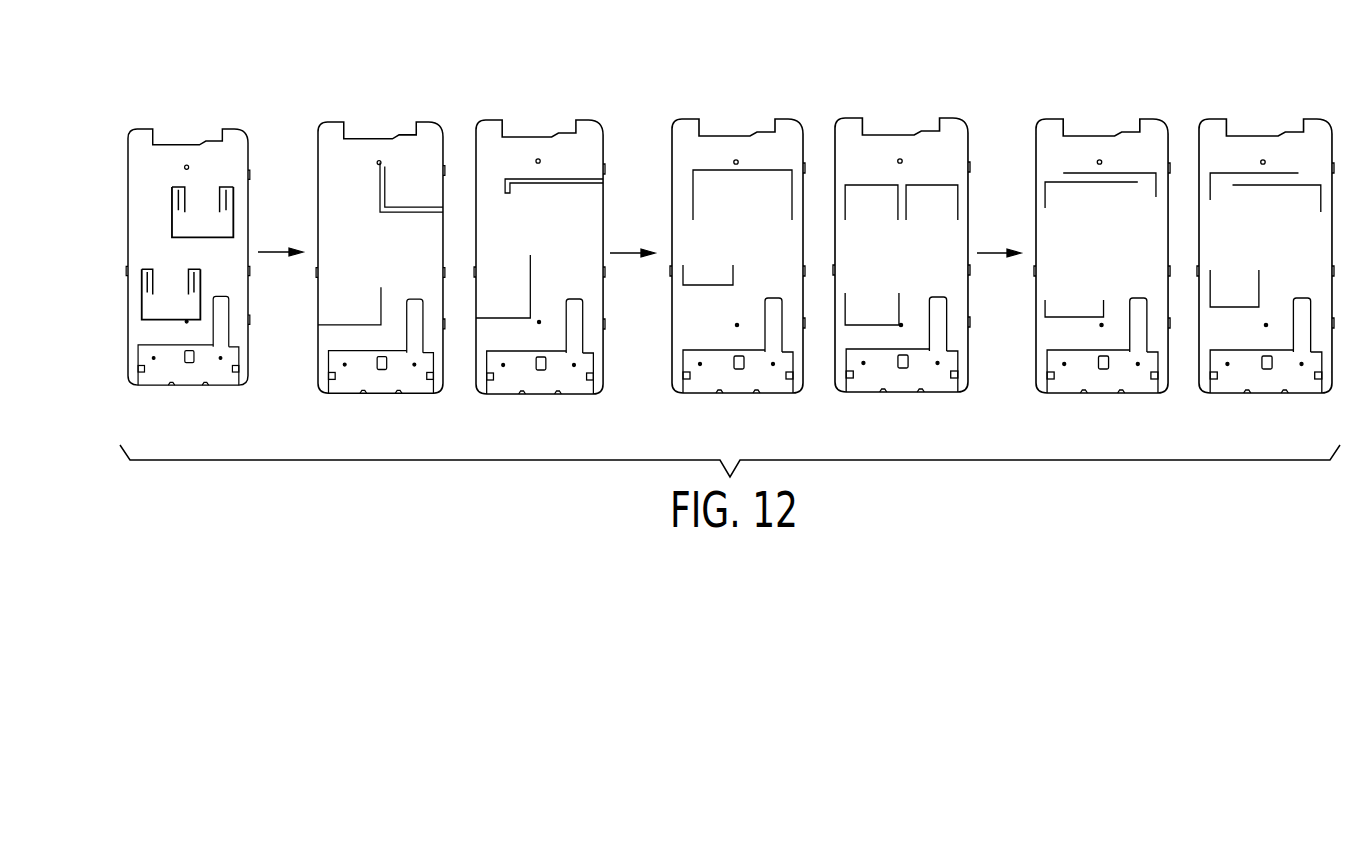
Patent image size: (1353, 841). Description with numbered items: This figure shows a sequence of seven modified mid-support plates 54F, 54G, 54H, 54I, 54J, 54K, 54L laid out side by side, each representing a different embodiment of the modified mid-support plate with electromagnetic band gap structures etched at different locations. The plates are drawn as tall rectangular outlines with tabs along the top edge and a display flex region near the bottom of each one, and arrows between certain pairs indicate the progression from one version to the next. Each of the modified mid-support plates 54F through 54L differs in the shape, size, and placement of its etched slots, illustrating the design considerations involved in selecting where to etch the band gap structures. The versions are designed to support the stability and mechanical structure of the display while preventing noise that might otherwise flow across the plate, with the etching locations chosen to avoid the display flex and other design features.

The modified mid-support plate 54F is at (171, 234).
The modified mid-support plate 54G is at (365, 235).
The modified mid-support plate 54H is at (523, 235).
The modified mid-support plate 54I is at (721, 235).
The modified mid-support plate 54J is at (884, 234).
The modified mid-support plate 54K is at (1085, 235).
The modified mid-support plate 54L is at (1248, 235).